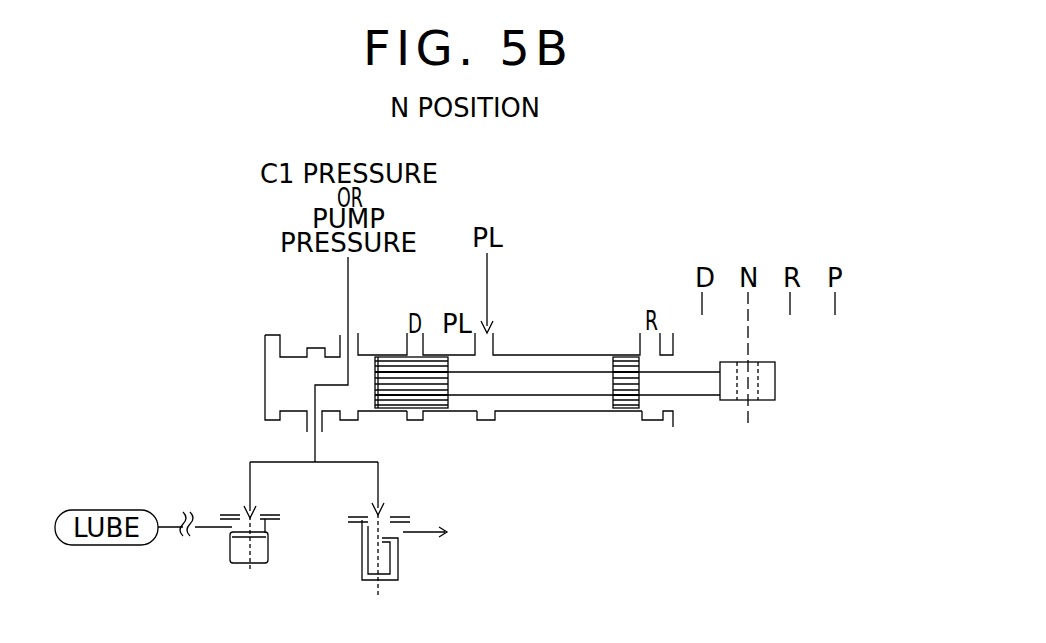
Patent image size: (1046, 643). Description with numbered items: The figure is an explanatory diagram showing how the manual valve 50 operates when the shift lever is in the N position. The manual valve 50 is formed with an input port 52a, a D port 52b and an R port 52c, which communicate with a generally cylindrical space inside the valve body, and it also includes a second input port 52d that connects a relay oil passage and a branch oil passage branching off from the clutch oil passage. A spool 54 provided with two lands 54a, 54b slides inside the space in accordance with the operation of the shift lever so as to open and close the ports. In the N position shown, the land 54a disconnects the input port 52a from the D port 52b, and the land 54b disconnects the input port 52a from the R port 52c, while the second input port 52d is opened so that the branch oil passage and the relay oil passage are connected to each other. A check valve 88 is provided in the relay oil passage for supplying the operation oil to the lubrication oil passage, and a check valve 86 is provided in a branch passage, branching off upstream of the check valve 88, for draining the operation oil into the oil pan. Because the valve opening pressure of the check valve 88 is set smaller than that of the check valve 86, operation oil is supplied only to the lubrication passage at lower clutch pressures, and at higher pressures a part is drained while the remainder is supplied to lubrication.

The manual valve 50 is at (814, 433).
The input port 52a is at (498, 340).
The D port 52b is at (407, 343).
The R port 52c is at (650, 343).
The second input port 52d is at (343, 342).
The spool 54 is at (575, 414).
The land 54a is at (397, 403).
The land 54b is at (628, 398).
The check valve 86 is at (405, 518).
The check valve 88 is at (268, 517).